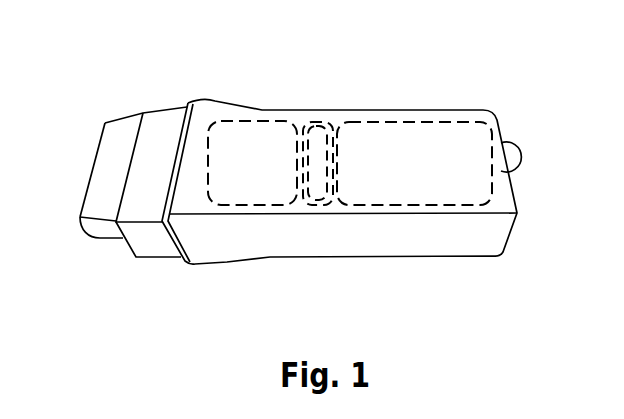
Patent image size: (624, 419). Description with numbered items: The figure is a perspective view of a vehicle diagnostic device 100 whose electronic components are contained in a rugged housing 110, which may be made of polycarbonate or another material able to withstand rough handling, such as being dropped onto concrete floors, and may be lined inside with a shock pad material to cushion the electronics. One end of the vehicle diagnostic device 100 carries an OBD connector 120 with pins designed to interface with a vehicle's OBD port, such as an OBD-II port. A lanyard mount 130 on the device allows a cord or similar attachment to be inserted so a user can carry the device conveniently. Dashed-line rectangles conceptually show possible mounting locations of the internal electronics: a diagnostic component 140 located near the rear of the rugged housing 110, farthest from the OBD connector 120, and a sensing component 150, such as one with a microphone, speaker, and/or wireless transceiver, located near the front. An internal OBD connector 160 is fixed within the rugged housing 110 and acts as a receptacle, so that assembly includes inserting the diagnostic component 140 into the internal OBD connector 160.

The vehicle diagnostic device 100 is at (112, 82).
The rugged housing 110 is at (210, 257).
The OBD connector 120 is at (87, 184).
The lanyard mount 130 is at (525, 152).
The diagnostic component 140 is at (418, 140).
The sensing component 150 is at (246, 125).
The internal OBD connector 160 is at (318, 125).